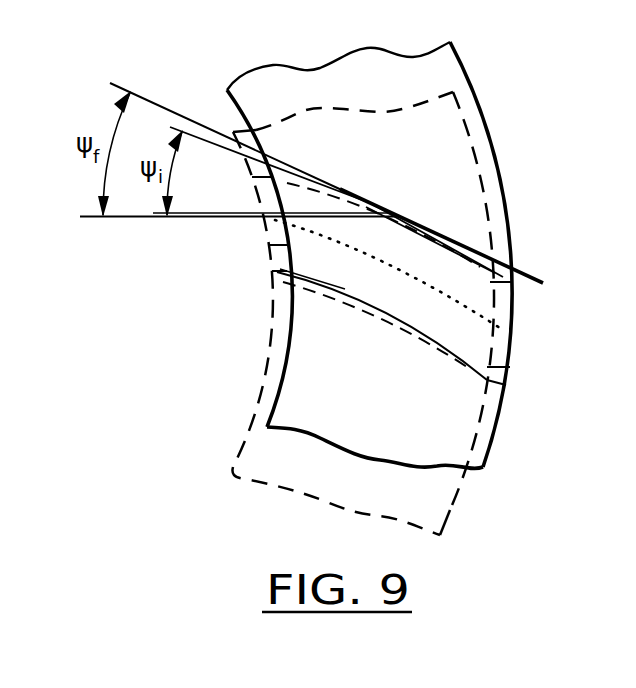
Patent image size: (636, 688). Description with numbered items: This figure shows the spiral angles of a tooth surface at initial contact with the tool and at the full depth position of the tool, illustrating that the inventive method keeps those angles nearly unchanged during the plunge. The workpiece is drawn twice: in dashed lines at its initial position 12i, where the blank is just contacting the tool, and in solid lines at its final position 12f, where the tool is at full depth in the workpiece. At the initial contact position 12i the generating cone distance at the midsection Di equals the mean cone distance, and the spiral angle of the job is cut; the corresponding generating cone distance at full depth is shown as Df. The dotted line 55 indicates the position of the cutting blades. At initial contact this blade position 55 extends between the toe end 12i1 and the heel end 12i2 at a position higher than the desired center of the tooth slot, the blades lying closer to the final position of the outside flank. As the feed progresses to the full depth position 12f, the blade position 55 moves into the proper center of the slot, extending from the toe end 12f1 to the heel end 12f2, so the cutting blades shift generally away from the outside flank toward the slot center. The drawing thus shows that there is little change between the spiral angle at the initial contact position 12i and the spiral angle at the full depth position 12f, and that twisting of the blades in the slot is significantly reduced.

The final position of the workpiece 12f is at (477, 84).
The initial position of the workpiece 12i is at (467, 130).
The generating cone distance at full depth Df is at (537, 239).
The generating cone distance at initial contact Di is at (490, 235).
The position of the cutting blades 55 is at (467, 308).
The toe end at full depth position 12f1 is at (270, 247).
The heel end at full depth position 12f2 is at (509, 347).
The toe end at initial contact position 12i1 is at (270, 272).
The heel end at initial contact position 12i2 is at (503, 369).